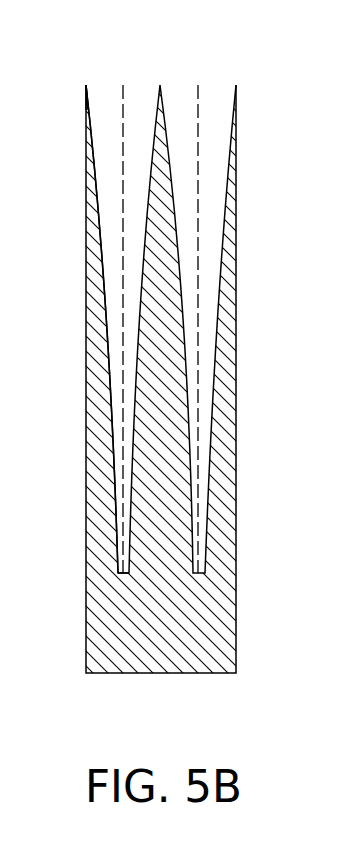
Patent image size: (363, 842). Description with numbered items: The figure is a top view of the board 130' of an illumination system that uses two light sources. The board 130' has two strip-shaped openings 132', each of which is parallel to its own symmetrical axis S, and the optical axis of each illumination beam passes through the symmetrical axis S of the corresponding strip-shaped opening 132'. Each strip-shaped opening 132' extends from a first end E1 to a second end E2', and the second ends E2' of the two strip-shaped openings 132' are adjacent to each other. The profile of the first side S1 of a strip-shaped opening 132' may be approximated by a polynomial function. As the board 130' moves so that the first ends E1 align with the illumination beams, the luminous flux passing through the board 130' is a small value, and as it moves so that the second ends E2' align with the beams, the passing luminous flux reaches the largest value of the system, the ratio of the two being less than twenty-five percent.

The board 130' is at (181, 393).
The strip-shaped opening 132' is at (203, 298).
The symmetrical axis S is at (123, 103).
The first side S1 is at (97, 183).
The first end E1 is at (122, 575).
The second end E2' is at (69, 67).